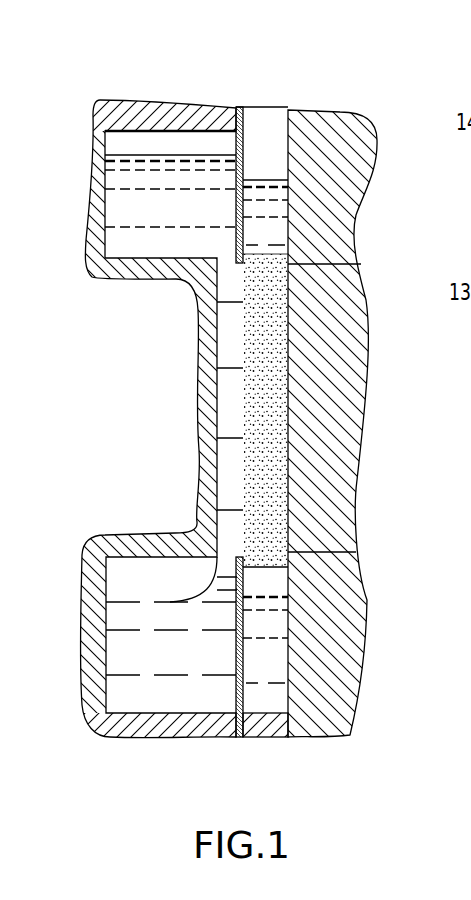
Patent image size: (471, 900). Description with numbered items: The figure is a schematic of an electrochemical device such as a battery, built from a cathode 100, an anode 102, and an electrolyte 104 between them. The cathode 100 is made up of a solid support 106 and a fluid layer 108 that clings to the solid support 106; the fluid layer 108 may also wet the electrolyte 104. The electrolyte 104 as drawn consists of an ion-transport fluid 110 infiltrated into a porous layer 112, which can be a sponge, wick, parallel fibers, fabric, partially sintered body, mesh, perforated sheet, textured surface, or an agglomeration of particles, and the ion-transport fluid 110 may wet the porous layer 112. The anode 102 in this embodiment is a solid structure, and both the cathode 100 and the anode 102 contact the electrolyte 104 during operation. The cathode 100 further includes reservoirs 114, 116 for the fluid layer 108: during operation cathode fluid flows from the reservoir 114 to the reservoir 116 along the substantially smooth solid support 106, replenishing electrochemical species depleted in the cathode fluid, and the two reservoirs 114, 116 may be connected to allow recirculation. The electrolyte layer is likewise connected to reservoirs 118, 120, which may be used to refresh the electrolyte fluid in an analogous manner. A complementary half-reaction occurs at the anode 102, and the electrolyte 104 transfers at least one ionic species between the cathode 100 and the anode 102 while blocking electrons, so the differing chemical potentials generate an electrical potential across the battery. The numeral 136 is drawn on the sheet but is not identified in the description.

The cathode 100 is at (235, 85).
The anode 102 is at (340, 369).
The electrolyte 104 is at (290, 741).
The solid support 106 is at (200, 443).
The fluid layer 108 is at (228, 340).
The ion-transport fluid 110 is at (272, 562).
The porous layer 112 is at (285, 492).
The reservoir 114 is at (133, 219).
The reservoir 116 is at (130, 620).
The reservoir 118 is at (272, 213).
The reservoir 120 is at (275, 657).
The terminal 136 is at (470, 244).